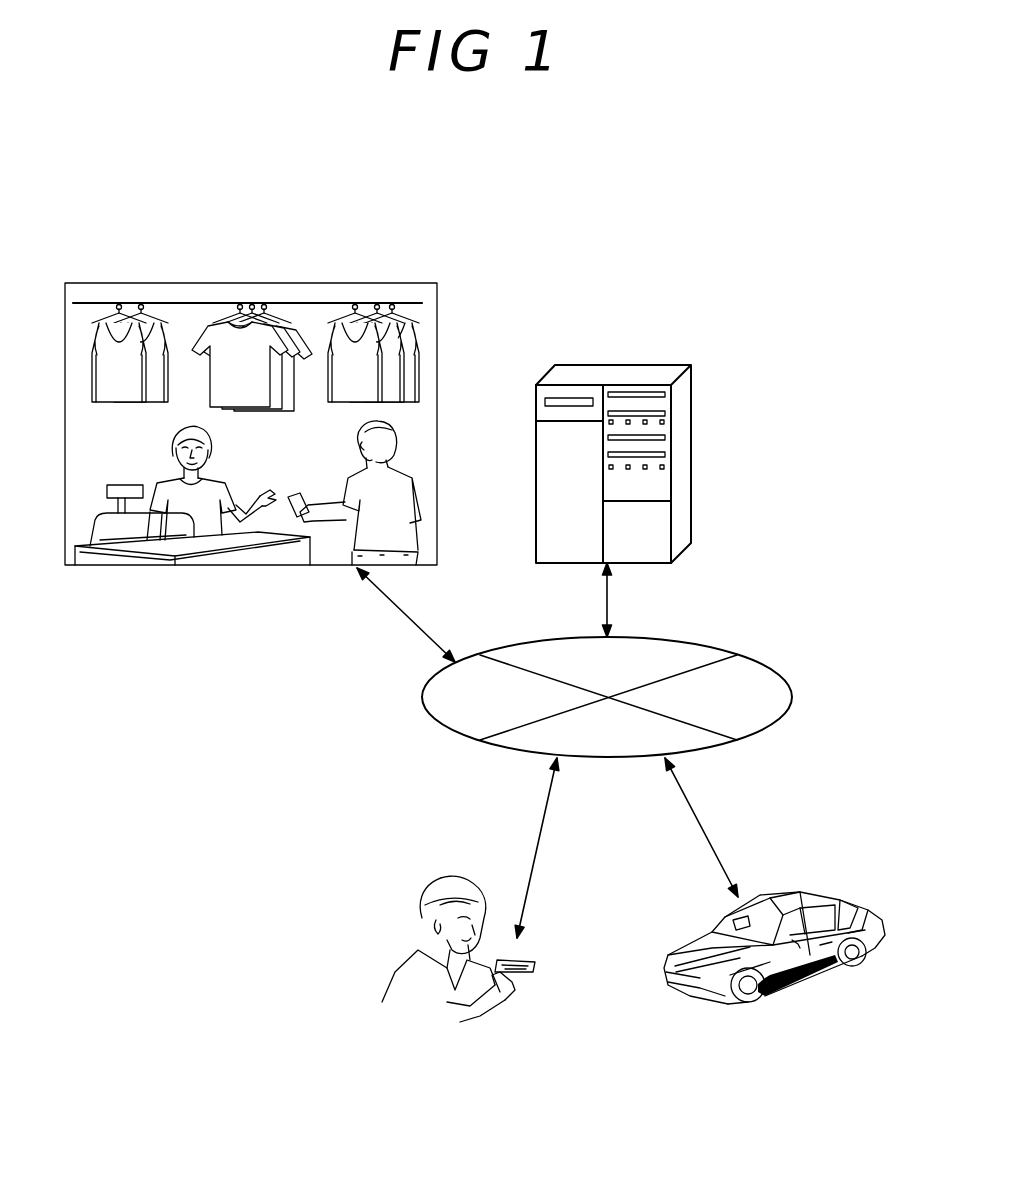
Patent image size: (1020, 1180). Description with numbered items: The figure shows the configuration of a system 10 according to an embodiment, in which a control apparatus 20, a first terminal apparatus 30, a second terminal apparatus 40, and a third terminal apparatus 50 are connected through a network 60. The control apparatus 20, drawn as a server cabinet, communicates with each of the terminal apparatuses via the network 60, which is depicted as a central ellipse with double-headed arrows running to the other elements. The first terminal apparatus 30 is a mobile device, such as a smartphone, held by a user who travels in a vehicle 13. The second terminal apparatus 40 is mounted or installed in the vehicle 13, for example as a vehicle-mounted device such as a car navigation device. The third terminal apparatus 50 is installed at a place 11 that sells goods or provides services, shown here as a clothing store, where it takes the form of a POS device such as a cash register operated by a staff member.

The system 10 is at (833, 562).
The place 11 is at (251, 402).
The vehicle 13 is at (805, 980).
The control apparatus 20 is at (536, 469).
The first terminal apparatus 30 is at (545, 967).
The second terminal apparatus 40 is at (745, 925).
The third terminal apparatus 50 is at (108, 527).
The network 60 is at (792, 697).